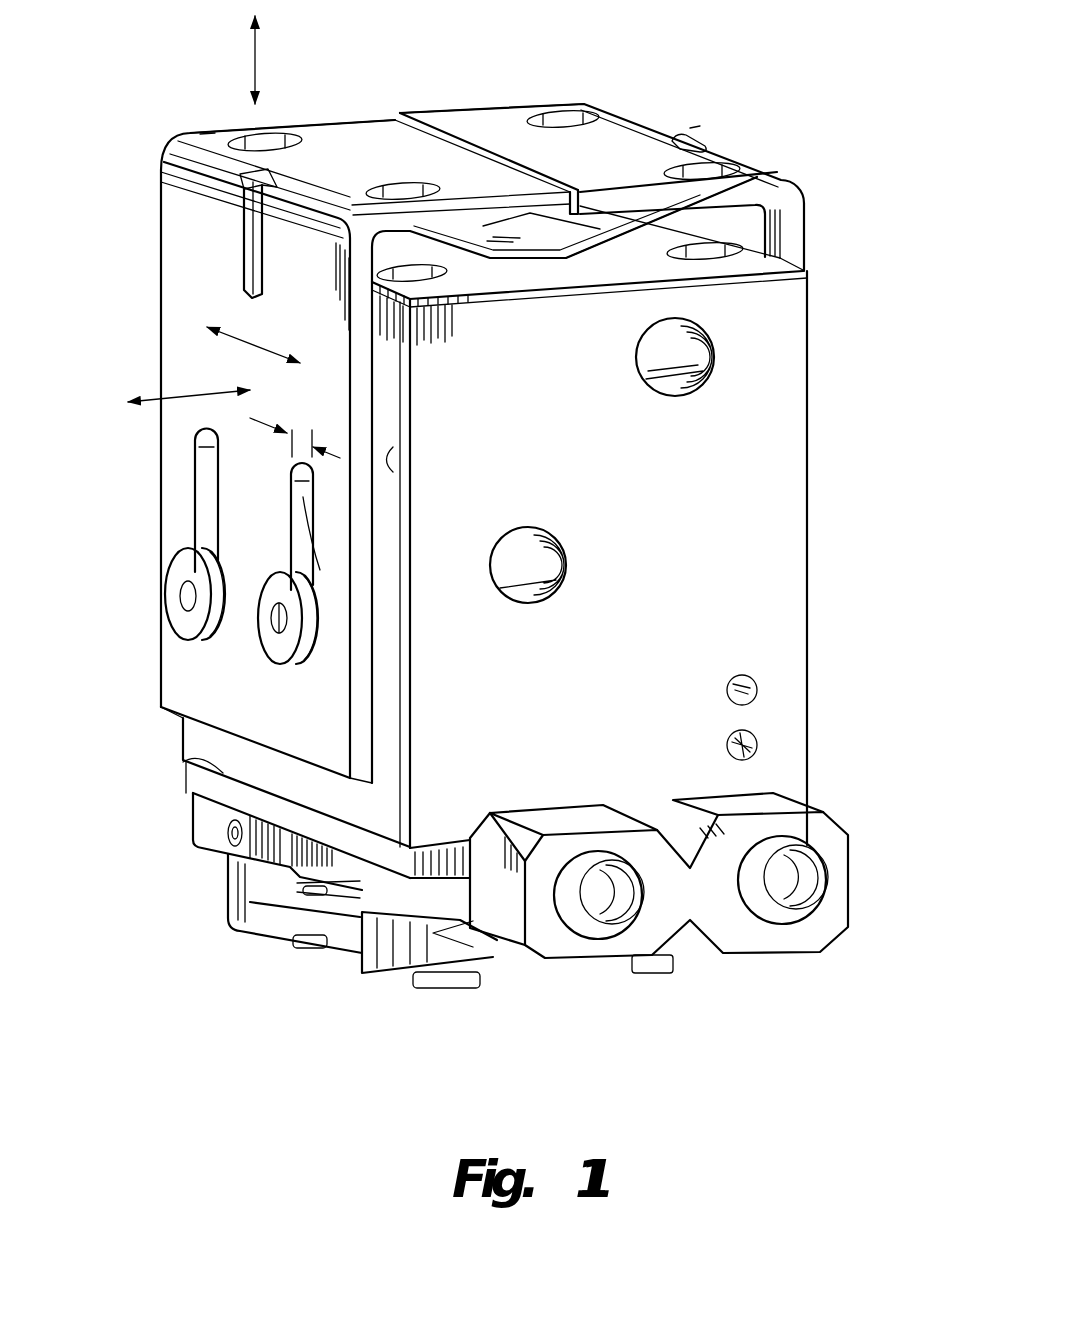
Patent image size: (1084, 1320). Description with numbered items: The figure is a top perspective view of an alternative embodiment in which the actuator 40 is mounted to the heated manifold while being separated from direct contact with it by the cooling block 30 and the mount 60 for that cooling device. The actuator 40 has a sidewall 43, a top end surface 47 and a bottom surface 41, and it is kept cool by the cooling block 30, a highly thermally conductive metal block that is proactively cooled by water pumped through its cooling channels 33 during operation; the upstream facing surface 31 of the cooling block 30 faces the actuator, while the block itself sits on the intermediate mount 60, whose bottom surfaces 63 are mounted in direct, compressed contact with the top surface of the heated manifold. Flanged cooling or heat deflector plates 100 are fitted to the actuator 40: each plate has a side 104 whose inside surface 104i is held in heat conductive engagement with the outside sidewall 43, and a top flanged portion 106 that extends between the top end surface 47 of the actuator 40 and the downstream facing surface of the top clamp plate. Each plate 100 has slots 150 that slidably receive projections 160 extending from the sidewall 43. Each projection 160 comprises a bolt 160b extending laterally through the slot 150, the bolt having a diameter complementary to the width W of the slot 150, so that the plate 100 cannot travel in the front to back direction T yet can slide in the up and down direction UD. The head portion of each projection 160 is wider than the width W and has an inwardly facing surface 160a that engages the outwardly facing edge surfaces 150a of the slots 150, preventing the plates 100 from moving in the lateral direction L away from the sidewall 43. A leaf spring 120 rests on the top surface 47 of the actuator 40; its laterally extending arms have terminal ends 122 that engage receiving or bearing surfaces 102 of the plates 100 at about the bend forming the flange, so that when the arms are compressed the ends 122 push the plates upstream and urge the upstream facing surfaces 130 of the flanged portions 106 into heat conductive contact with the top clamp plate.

The cooling or heat deflector plate 100 is at (158, 252).
The receiving or bearing surface 102 is at (210, 130).
The side of the plate 104 is at (161, 293).
The inside surface of the plate side 104i is at (378, 682).
The top flanged portion 106 is at (362, 125).
The leaf spring 120 is at (467, 240).
The terminal end of spring arm 122 is at (243, 180).
The top or upstream facing surface 130 is at (350, 153).
The top end surface of the actuator 47 is at (636, 240).
The actuator 40 is at (806, 327).
The sidewall of the actuator 43 is at (393, 472).
The slot 150 is at (300, 497).
The outwardly facing edge surface of the slot 150a is at (320, 570).
The projection 160 is at (270, 592).
The inwardly facing surface of the head portion 160a is at (185, 717).
The bolt 160b is at (277, 618).
The top or upstream facing surface of the cooling block 31 is at (183, 760).
The bottom surface of the actuator body 41 is at (193, 812).
The mount 60 is at (228, 883).
The bottom surface of the mount 63 is at (442, 988).
The cooling block 30 is at (845, 818).
The cooling channel 33 is at (592, 932).
The up and down direction UD is at (259, 58).
The front to back direction T is at (265, 350).
The lateral direction L is at (196, 396).
The width of the slot W is at (303, 444).